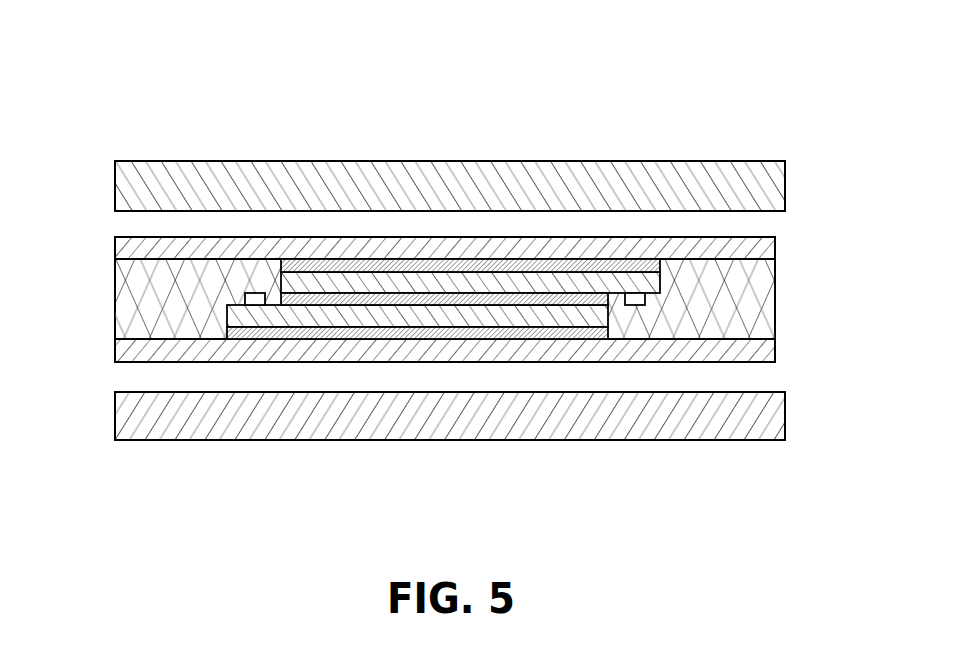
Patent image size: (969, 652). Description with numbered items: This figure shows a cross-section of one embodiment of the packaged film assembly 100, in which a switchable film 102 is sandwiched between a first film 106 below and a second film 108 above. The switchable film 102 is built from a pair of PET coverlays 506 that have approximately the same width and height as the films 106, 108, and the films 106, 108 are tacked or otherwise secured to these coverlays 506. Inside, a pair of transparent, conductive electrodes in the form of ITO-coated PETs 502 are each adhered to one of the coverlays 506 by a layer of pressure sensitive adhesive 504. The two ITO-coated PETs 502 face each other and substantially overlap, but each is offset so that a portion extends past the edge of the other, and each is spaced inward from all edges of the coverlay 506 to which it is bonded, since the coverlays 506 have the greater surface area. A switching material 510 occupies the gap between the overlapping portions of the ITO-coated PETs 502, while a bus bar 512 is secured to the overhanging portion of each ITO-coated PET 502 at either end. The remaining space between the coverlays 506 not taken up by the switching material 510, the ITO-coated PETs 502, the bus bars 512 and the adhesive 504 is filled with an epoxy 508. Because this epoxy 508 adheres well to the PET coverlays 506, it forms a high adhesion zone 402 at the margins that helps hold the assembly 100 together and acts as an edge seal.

The packaged film assembly 100 is at (694, 62).
The switchable film 102 is at (810, 245).
The first film 106 is at (177, 441).
The second film 108 is at (176, 161).
The high adhesion zone 402 is at (115, 302).
The ITO-coated PET 502 is at (440, 272).
The pressure sensitive adhesive 504 is at (376, 259).
The PET coverlay 506 is at (115, 244).
The epoxy 508 is at (115, 323).
The switching material 510 is at (497, 293).
The bus bar 512 is at (252, 293).